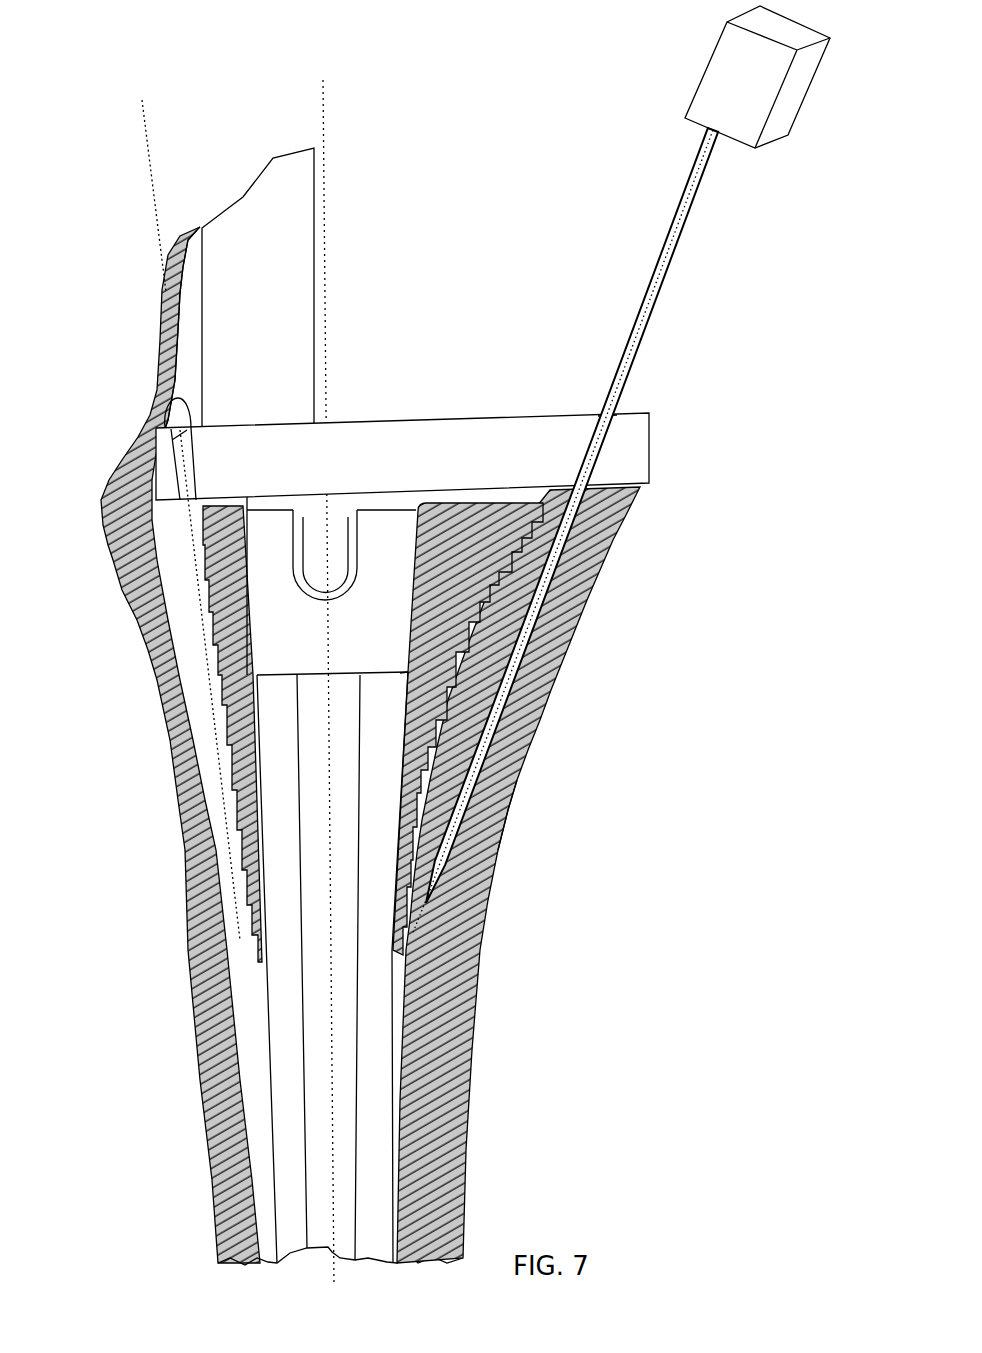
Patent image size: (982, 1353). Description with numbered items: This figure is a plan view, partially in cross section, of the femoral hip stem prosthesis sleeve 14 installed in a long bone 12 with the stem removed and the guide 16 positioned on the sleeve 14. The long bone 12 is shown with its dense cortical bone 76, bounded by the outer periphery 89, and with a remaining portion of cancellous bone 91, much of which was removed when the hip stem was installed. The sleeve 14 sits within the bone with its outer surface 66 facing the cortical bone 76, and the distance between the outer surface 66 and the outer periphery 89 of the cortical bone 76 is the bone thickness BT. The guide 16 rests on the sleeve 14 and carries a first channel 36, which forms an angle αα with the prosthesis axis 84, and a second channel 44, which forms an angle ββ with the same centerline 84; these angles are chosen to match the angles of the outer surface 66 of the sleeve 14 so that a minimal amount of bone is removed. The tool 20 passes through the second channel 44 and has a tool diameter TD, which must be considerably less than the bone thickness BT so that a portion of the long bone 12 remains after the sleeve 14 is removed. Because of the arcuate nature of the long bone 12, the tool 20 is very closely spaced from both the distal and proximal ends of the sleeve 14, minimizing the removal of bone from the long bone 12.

The long bone 12 is at (152, 1122).
The sleeve 14 is at (460, 576).
The guide 16 is at (650, 455).
The tool 20 is at (643, 345).
The first channel 36 is at (170, 408).
The second channel 44 is at (615, 417).
The outer surface 66 is at (398, 674).
The cortical bone 76 is at (449, 988).
The prosthesis axis 84 is at (330, 282).
The outer periphery 89 is at (506, 815).
The cancellous bone 91 is at (193, 569).
The tool diameter TD is at (585, 222).
The bone thickness BT is at (347, 1182).